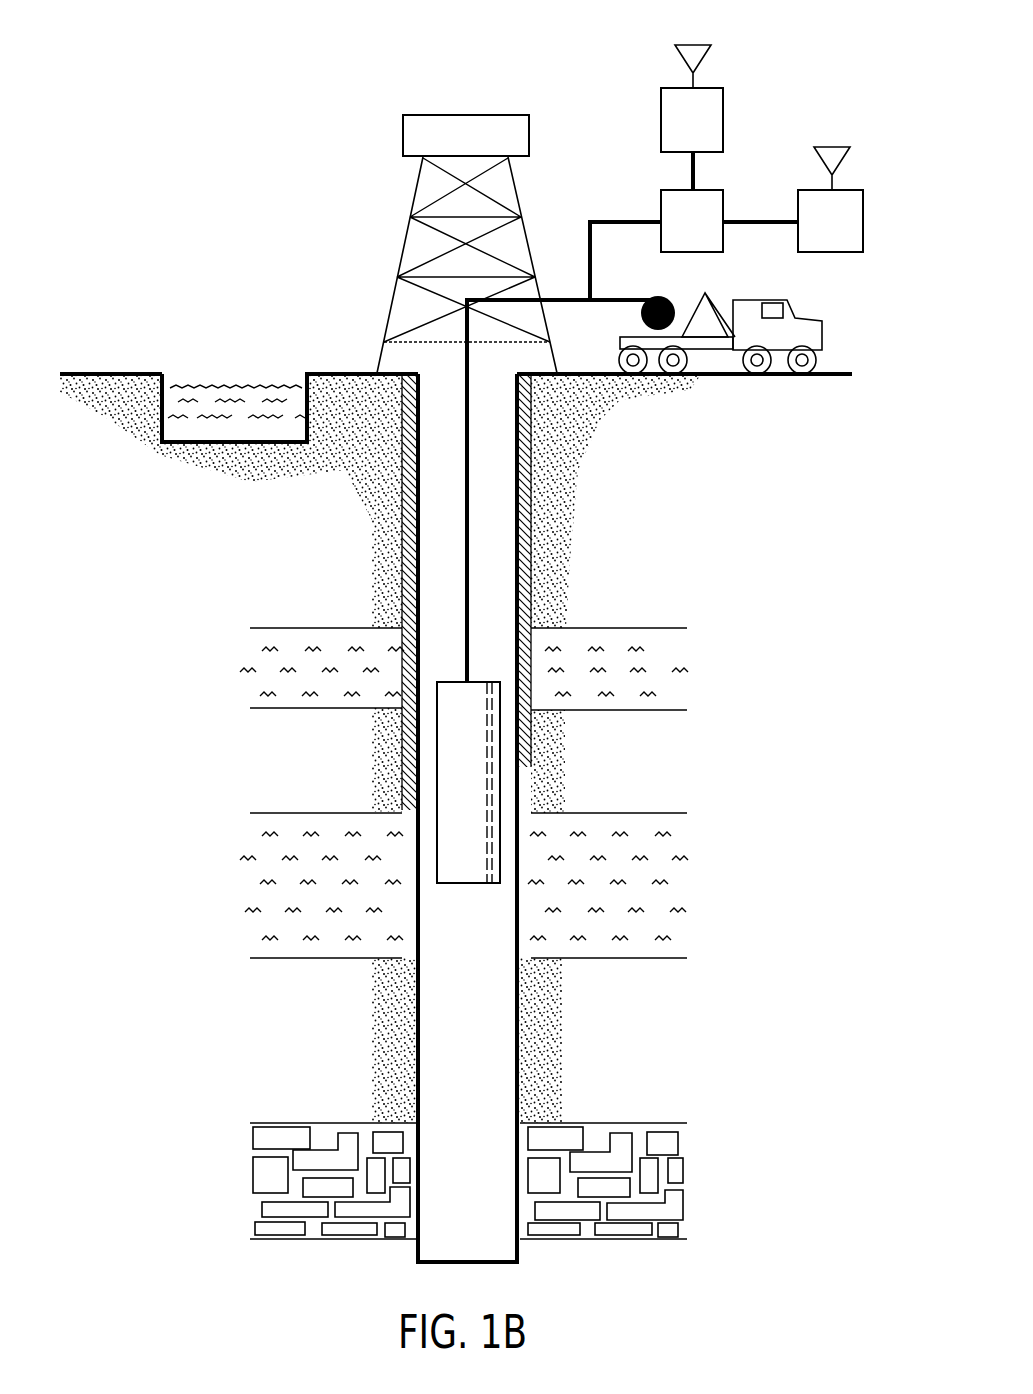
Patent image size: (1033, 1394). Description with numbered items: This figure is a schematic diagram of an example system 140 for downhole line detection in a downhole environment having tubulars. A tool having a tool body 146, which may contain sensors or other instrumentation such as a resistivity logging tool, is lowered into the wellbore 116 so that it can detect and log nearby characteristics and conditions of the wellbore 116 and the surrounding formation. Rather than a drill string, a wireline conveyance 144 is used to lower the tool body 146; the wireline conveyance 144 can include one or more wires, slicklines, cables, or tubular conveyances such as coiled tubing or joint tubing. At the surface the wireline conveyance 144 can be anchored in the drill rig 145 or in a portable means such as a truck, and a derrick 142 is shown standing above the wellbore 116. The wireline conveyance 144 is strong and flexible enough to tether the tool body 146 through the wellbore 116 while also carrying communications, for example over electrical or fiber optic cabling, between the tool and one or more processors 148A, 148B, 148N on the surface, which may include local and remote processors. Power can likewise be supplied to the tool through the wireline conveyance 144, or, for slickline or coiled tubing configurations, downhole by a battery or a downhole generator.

The system 140 is at (304, 158).
The drilling rig / derrick 142 is at (542, 164).
The wireline conveyance 144 is at (467, 305).
The drill rig 145 is at (632, 318).
The tool body 146 is at (455, 770).
The processor 148A is at (661, 95).
The processor 148B is at (722, 192).
The processor 148N is at (830, 252).
The wellbore 116 is at (510, 1037).